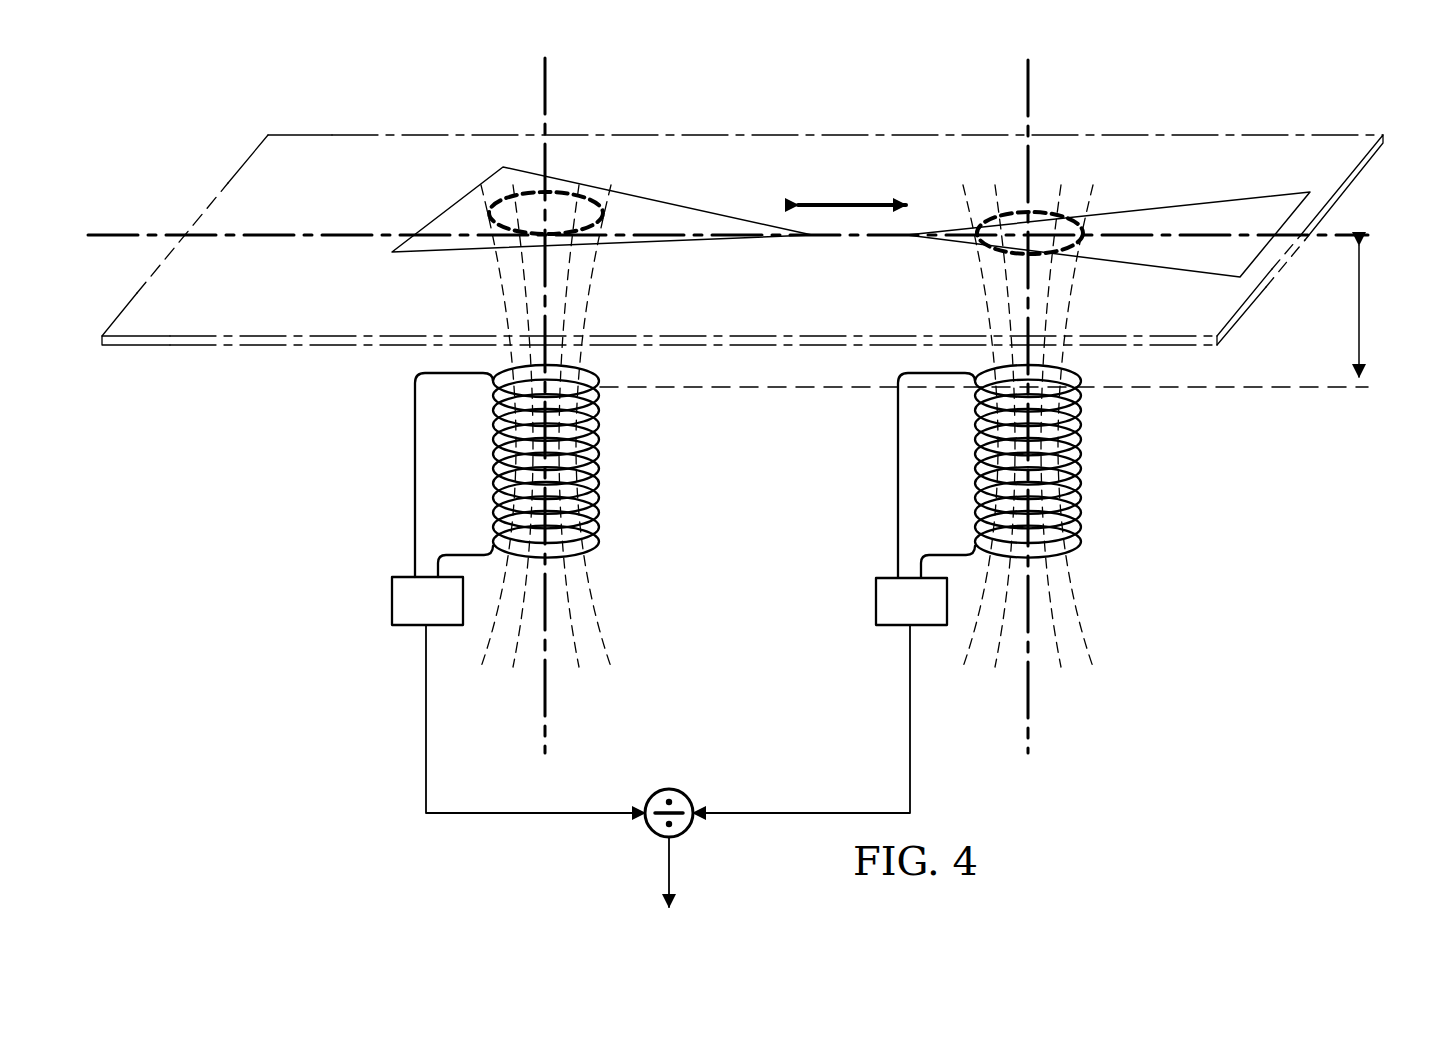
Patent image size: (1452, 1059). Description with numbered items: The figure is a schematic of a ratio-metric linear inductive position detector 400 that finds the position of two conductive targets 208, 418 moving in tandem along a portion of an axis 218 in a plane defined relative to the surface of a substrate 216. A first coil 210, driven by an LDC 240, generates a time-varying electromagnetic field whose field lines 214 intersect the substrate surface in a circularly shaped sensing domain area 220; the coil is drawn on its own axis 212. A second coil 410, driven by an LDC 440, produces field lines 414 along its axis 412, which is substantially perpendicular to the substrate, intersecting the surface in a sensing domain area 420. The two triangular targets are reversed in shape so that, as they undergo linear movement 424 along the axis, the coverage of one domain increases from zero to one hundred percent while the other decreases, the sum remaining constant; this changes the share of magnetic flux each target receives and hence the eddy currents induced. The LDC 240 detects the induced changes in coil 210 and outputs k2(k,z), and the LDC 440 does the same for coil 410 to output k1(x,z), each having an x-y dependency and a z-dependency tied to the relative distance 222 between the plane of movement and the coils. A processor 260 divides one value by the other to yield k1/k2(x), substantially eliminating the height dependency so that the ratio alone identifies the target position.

The inductive position detector 400 is at (663, 78).
The target 208 is at (1150, 198).
The coil 210 is at (1067, 564).
The axis of second coil 212 is at (1040, 65).
The field lines 214 is at (1068, 310).
The substrate 216 is at (392, 132).
The axis 218 is at (101, 232).
The sensing domain area 220 is at (985, 250).
The relative distance 222 is at (1362, 312).
The LDC 240 is at (876, 602).
The processor 260 is at (685, 833).
The coil 410 is at (585, 564).
The axis 412 is at (545, 88).
The field lines 414 is at (594, 283).
The target 418 is at (406, 256).
The sensing domain area 420 is at (495, 212).
The direction of target motion 424 is at (830, 212).
The LDC 440 is at (392, 602).